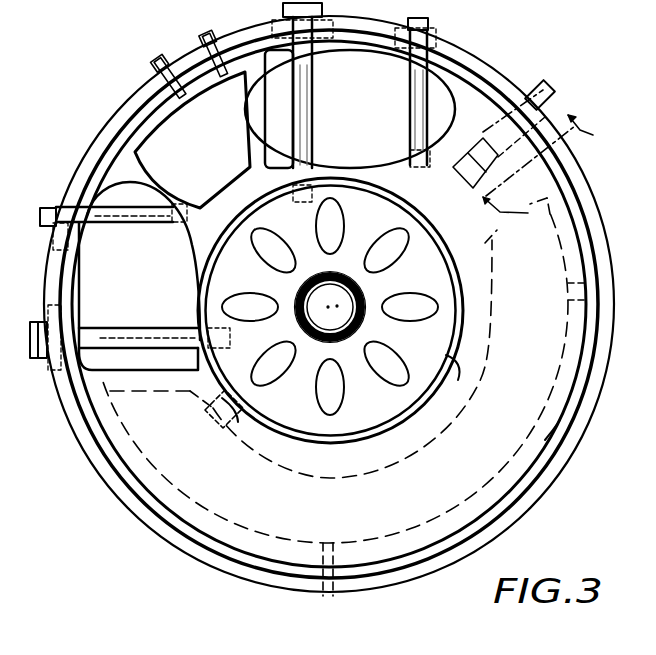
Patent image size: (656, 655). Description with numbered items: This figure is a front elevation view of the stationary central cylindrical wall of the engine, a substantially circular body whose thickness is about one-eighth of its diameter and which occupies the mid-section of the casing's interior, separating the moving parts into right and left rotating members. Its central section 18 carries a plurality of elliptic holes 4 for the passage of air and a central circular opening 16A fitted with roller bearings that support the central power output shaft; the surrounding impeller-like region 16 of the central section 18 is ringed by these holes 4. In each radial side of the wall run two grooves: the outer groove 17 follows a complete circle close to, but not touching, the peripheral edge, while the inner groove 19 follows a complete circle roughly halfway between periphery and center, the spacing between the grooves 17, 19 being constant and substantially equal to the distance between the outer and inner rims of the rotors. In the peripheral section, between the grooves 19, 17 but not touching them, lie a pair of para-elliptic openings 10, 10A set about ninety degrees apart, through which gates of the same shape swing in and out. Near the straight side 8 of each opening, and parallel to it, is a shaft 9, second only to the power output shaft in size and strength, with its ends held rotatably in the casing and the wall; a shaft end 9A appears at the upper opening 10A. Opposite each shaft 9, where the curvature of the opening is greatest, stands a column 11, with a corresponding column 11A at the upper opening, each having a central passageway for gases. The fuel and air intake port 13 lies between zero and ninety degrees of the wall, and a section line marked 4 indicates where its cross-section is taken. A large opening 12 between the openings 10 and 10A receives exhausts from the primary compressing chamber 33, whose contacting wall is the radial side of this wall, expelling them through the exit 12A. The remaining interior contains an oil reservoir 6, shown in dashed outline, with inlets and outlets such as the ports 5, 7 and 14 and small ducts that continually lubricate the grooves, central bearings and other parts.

The elliptic holes 4 is at (479, 254).
The bottom pipe 5 is at (322, 593).
The oil reservoir 6 is at (215, 585).
The pipe stub 7 is at (231, 422).
The straight side 8 is at (110, 370).
The shaft 9 is at (38, 362).
The top pipe 9A is at (300, 145).
The para-elliptic opening 10 is at (139, 276).
The para-elliptic opening 10A is at (350, 109).
The column 11 is at (48, 205).
The inlet pipe 11A is at (428, 22).
The large opening 12 is at (192, 140).
The exhaust exit opening 12A is at (188, 57).
The fuel and air intake port 13 is at (552, 85).
The nozzle 14 is at (602, 288).
The impeller housing 16 is at (355, 300).
The central circular opening 16A is at (343, 286).
The outer groove 17 is at (588, 390).
The central section 18 is at (330, 306).
The inner groove 19 is at (450, 358).
The primary compressing chamber 33 is at (655, 168).